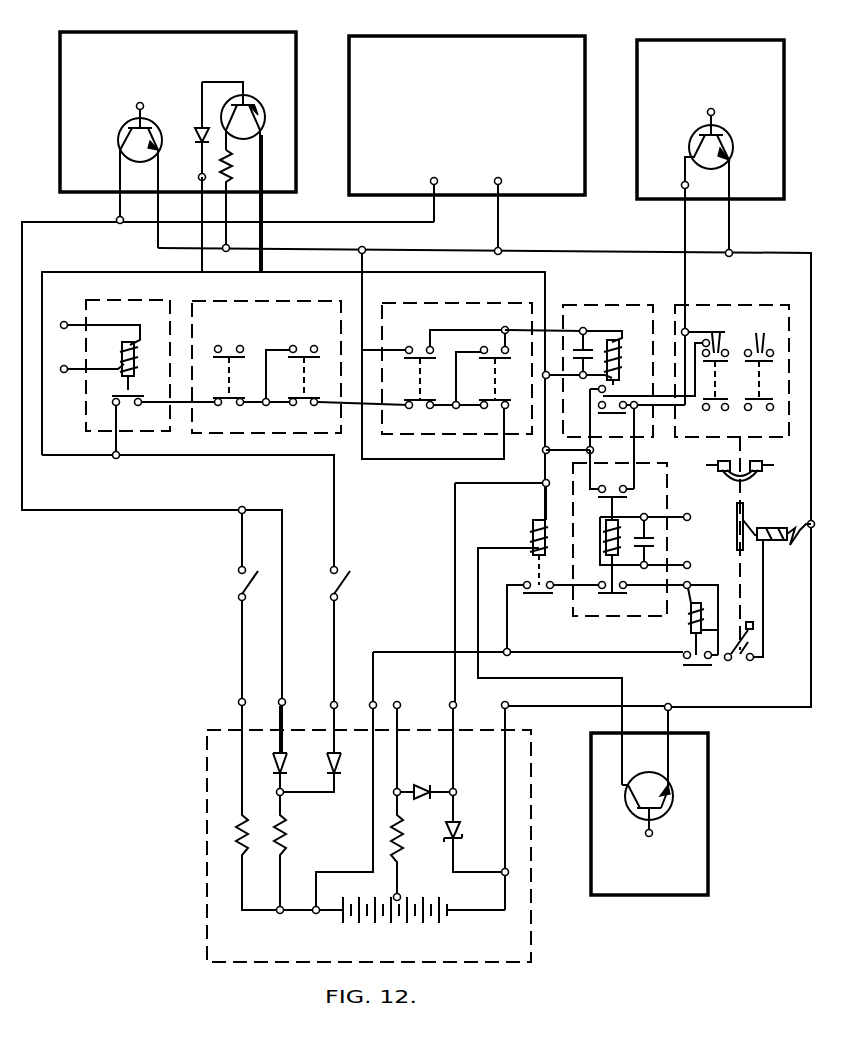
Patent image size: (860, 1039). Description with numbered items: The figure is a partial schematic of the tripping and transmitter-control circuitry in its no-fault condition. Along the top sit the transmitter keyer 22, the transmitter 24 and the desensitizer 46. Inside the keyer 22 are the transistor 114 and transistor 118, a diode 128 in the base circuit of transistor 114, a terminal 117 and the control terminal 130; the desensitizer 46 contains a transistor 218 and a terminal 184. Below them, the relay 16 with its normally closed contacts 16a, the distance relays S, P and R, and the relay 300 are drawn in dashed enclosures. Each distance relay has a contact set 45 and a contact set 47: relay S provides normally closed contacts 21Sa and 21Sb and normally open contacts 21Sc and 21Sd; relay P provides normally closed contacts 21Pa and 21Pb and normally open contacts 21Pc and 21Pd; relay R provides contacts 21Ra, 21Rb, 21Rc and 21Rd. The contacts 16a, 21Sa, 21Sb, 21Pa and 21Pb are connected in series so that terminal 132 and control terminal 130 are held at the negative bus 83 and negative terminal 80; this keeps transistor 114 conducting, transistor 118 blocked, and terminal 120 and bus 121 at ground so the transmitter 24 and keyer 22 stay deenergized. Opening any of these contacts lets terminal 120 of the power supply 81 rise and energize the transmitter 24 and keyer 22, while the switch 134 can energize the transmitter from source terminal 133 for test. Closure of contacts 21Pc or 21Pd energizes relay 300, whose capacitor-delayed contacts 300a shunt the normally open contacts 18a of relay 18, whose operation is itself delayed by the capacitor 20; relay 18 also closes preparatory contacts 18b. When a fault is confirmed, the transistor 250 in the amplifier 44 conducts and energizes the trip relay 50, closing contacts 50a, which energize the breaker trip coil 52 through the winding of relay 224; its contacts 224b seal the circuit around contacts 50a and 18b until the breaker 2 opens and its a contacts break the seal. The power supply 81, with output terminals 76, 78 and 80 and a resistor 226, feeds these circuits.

The transmitter keyer 22 is at (215, 37).
The transmitter 24 is at (483, 37).
The desensitizer 46 is at (722, 38).
The terminal 117 is at (137, 105).
The transistor 118 is at (118, 140).
The transistor 114 is at (246, 99).
The diode 128 is at (197, 136).
The control terminal 130 is at (198, 177).
The transistor 218 is at (724, 138).
The terminal 184 is at (682, 185).
The bus 121 is at (334, 227).
The negative bus 83 is at (329, 255).
The relay 16 is at (143, 305).
The normally closed contacts 16a is at (122, 406).
The distance relay S is at (300, 300).
The distance relay P is at (502, 302).
The distance relay R is at (774, 302).
The normally open contacts 21Sc is at (222, 346).
The normally open contacts 21Sd is at (304, 346).
The normally closed contacts 21Sa is at (226, 408).
The normally closed contacts 21Sb is at (300, 411).
The normally open contacts 21Pc is at (426, 350).
The normally open contacts 21Pd is at (486, 346).
The normally closed contacts 21Pa is at (428, 409).
The normally closed contacts 21Pb is at (486, 409).
The normally open contacts 21Rc is at (707, 332).
The normally open contacts 21Rd is at (754, 332).
The normally closed contacts 21Rb is at (714, 424).
The normally closed contacts 21Ra is at (766, 414).
The contact set 45 is at (226, 378).
The contact set 47 is at (301, 378).
The relay 300 is at (630, 306).
The normally open contacts 300a is at (625, 416).
The relay 18 is at (651, 468).
The normally open contacts 18a is at (612, 473).
The normally open contacts 18b is at (608, 583).
The capacitor 20 is at (656, 543).
The trip relay 50 is at (530, 524).
The contacts 50a is at (528, 578).
The relay 224 is at (704, 598).
The contacts 224b is at (678, 648).
The breaker 2 is at (752, 475).
The trip coil 52 is at (774, 579).
The a contacts a is at (741, 641).
The switch 134 is at (344, 587).
The source terminal 133 is at (238, 702).
The terminal 120 is at (278, 700).
The terminal 132 is at (331, 702).
The output terminal 76 is at (401, 704).
The terminal 78 is at (457, 704).
The negative terminal 80 is at (509, 704).
The power supply 81 is at (534, 804).
The resistor 226 is at (287, 842).
The amplifier 44 is at (709, 762).
The transistor 250 is at (641, 822).